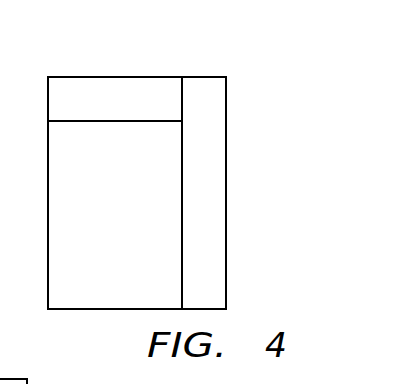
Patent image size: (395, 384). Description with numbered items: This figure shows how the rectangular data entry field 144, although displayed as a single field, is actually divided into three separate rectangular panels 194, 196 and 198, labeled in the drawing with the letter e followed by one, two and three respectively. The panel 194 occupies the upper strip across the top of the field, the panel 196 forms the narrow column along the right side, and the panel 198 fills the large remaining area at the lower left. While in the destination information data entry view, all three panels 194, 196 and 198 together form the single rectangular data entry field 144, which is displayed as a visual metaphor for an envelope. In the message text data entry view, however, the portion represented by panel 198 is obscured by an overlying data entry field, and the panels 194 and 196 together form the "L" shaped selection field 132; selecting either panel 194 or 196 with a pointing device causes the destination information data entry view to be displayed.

The "L" shaped selection field 132 is at (168, 112).
The rectangular data entry field 144 is at (122, 77).
The rectangular panel 194 is at (163, 88).
The rectangular panel 196 is at (214, 243).
The rectangular panel 198 is at (87, 294).